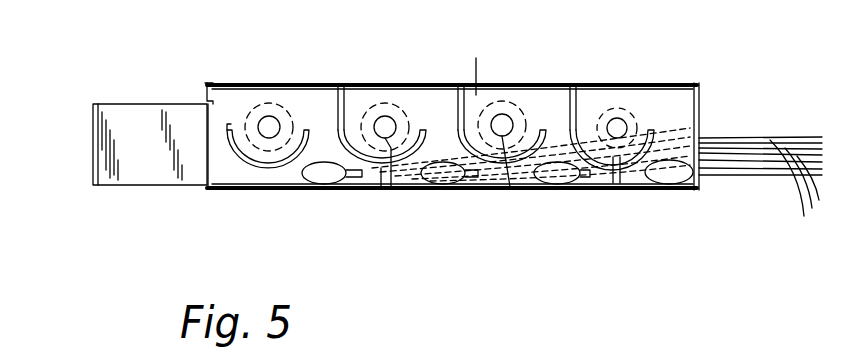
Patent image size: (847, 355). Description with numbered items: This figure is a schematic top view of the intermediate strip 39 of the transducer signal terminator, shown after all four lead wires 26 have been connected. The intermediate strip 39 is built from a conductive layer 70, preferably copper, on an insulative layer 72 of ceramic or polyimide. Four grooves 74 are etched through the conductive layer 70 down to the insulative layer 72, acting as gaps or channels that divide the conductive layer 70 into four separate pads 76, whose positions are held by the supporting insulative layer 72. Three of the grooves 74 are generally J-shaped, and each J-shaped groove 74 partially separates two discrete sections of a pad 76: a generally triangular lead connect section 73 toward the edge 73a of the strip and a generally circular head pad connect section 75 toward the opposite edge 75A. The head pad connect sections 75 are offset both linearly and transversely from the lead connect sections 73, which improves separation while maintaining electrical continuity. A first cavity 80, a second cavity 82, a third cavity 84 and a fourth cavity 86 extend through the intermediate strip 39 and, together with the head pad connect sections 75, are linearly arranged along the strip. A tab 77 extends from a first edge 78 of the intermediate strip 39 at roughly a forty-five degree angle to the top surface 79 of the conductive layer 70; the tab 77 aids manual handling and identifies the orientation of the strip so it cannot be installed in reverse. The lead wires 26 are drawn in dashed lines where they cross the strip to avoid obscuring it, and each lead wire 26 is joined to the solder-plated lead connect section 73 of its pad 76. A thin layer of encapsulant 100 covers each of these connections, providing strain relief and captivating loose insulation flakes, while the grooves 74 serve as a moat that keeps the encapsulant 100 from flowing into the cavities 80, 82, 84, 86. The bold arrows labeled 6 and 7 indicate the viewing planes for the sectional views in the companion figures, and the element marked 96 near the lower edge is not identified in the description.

The section line 6- 6 is at (326, 140).
The section line 7- 7 is at (671, 92).
The lead wires 26 is at (597, 187).
The intermediate strip 39 is at (88, 79).
The conductive layer 70 is at (296, 100).
The insulative layer 72 is at (684, 80).
The lead connect sections 73 is at (294, 186).
The edge 73a is at (367, 192).
The grooves 74 is at (357, 90).
The head pad connect sections 75 is at (266, 115).
The edge 75A is at (394, 100).
The pads 76 is at (445, 94).
The tab 77 is at (128, 146).
The first edge 78 is at (204, 97).
The top surface 79 is at (226, 90).
The first cavity 80 is at (591, 188).
The second cavity 82 is at (509, 190).
The third cavity 84 is at (383, 190).
The fourth cavity 86 is at (258, 128).
The strain relief 96 is at (662, 190).
The encapsulant 100 is at (556, 190).